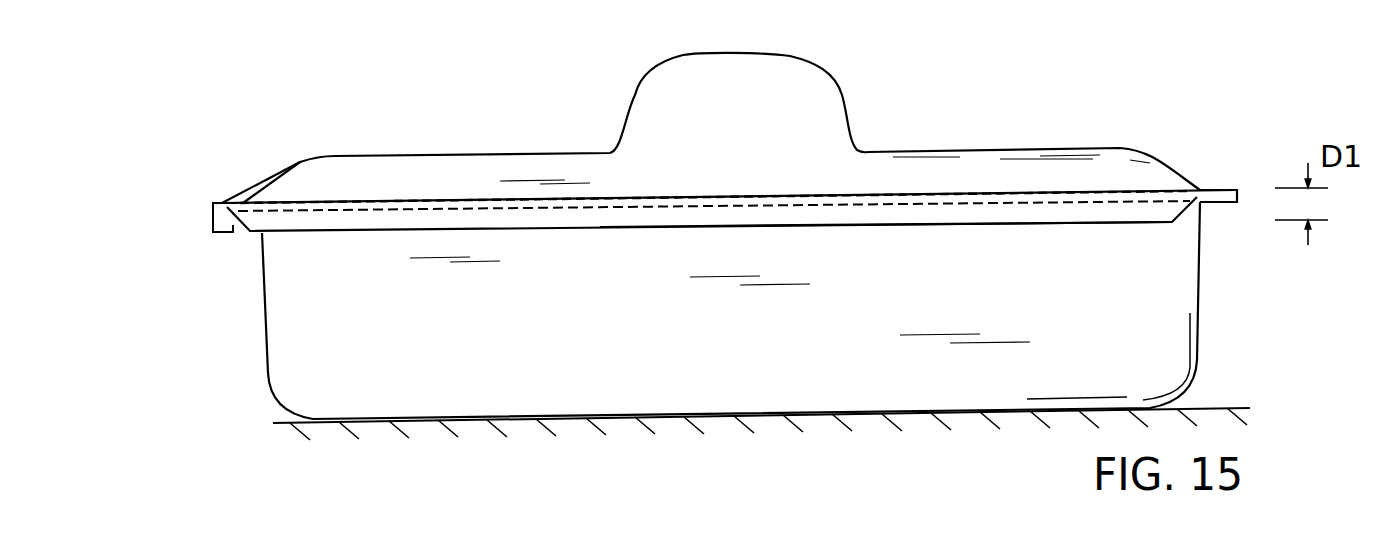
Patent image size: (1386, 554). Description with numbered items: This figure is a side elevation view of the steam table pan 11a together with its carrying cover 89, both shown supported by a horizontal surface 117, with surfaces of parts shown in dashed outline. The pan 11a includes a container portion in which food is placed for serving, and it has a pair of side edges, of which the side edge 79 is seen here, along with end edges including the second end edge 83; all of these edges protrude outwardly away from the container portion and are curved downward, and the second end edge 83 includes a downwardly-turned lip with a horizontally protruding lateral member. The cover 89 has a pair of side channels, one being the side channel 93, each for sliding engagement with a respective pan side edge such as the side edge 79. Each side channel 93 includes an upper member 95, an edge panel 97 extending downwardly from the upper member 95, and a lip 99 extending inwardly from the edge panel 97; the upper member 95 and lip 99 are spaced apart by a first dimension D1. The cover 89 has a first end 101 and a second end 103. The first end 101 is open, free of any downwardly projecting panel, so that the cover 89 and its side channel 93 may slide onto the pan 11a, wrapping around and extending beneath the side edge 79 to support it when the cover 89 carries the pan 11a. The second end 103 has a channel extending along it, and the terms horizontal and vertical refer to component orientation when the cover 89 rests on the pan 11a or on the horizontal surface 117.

The steam table pan 11a is at (1202, 315).
The side edge 79 is at (793, 200).
The second end edge 83 is at (223, 235).
The carrying cover 89 is at (928, 162).
The side channel 93 is at (883, 241).
The upper member 95 is at (993, 190).
The edge panel 97 is at (1120, 210).
The lip 99 is at (1004, 224).
The first end 101 is at (1215, 154).
The second end 103 is at (225, 179).
The horizontal surface 117 is at (1200, 408).